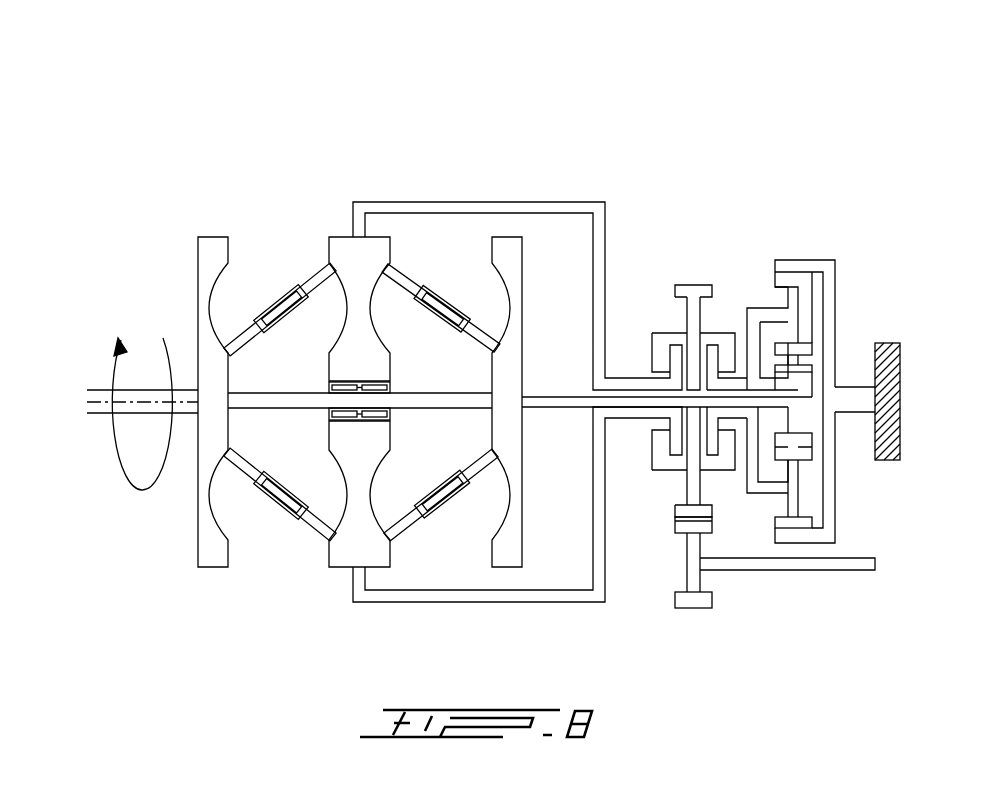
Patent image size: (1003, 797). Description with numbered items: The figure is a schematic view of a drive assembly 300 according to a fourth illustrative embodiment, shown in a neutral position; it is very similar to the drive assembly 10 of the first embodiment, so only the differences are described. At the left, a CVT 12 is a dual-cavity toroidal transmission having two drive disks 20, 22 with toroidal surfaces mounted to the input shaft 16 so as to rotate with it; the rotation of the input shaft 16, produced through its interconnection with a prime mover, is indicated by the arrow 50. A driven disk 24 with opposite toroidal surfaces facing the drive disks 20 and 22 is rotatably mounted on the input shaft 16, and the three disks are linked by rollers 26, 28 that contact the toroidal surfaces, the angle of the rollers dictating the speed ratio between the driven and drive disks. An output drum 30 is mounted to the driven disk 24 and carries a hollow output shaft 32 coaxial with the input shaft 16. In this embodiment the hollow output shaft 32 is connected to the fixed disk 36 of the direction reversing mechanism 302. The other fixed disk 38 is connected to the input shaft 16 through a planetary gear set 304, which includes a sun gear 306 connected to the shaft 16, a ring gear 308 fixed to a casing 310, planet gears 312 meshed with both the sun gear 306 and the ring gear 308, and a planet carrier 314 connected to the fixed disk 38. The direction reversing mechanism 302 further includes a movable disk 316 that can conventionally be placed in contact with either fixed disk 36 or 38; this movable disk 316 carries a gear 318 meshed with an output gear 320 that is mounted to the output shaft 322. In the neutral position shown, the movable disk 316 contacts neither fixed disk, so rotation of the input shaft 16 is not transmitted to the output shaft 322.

The drive assembly 10 is at (195, 178).
The CVT 12 is at (360, 178).
The input shaft 16 is at (87, 413).
The drive disk 20 is at (210, 553).
The drive disk 22 is at (510, 550).
The driven disk 24 is at (340, 553).
The roller 26 is at (308, 530).
The roller 28 is at (422, 537).
The output drum 30 is at (466, 202).
The hollow output shaft 32 is at (622, 387).
The fixed disk 36 is at (672, 438).
The fixed disk 38 is at (713, 355).
The arrow 50 is at (142, 490).
The drive assembly 300 is at (642, 113).
The direction reversing mechanism 302 is at (700, 240).
The planetary gear set 304 is at (826, 245).
The sun gear 306 is at (792, 422).
The ring gear 308 is at (830, 280).
The casing 310 is at (900, 412).
The planet gear 312 is at (795, 323).
The planet carrier 314 is at (753, 315).
The movable disk 316 is at (672, 467).
The gear 318 is at (700, 512).
The output gear 320 is at (697, 608).
The output shaft 322 is at (840, 570).